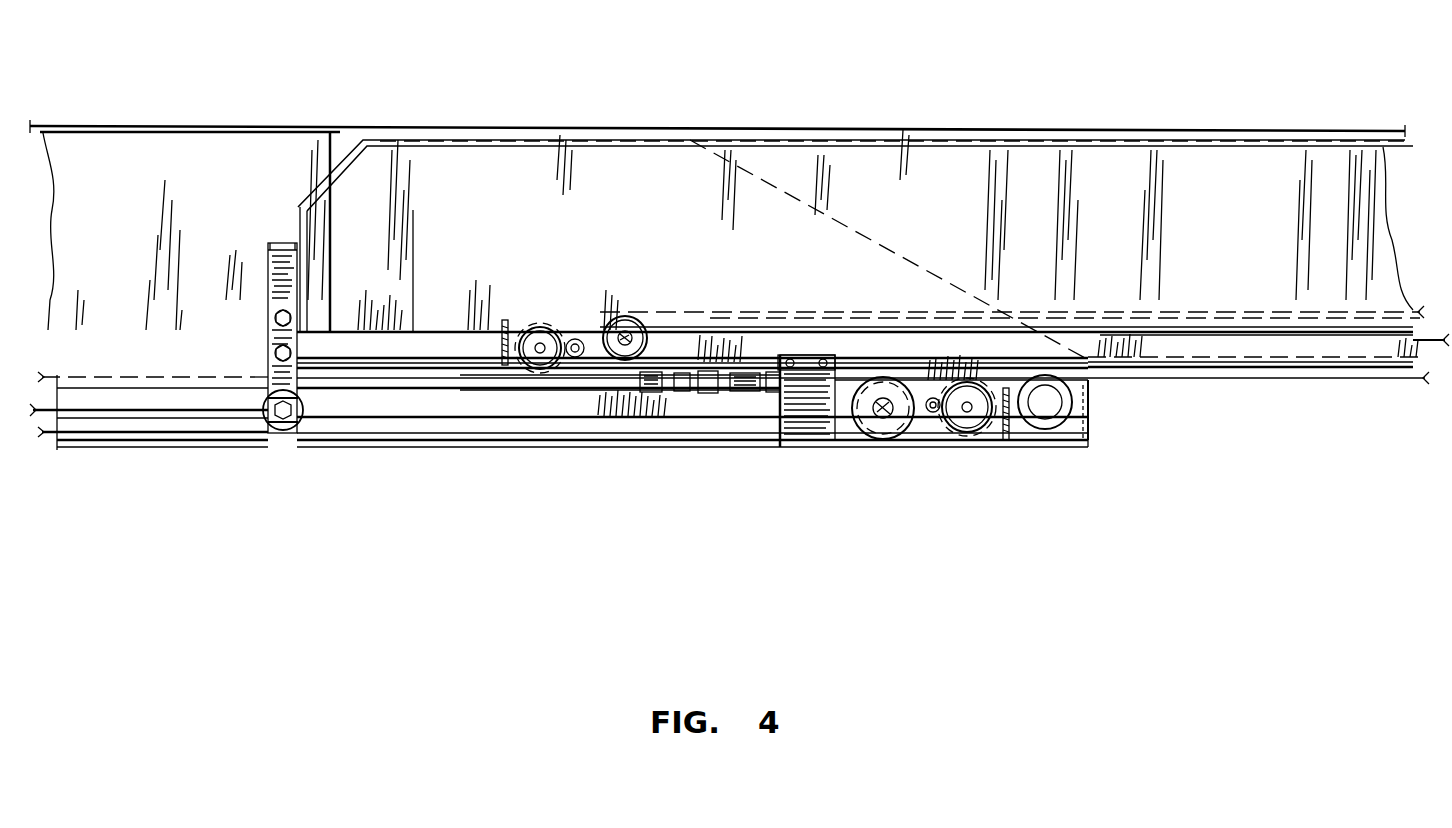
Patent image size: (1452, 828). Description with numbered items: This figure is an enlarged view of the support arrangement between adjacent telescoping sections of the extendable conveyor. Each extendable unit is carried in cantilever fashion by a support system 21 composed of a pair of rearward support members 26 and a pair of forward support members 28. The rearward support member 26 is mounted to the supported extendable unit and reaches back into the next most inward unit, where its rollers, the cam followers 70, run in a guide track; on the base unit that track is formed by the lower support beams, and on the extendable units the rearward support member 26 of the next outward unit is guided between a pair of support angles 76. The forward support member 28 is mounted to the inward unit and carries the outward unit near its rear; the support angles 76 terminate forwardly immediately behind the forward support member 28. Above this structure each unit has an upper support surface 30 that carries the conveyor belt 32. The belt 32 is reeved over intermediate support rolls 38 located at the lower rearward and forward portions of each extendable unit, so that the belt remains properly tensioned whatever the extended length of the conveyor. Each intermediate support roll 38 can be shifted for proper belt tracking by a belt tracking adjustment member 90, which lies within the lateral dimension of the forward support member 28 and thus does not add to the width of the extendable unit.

The support system 21 is at (770, 447).
The rearward support member 26 is at (268, 308).
The forward support member 28 is at (1050, 445).
The upper support surface 30 is at (792, 140).
The conveyor belt 32 is at (906, 127).
The intermediate support roll 38 is at (528, 328).
The cam follower 70 is at (273, 433).
The support angle 76 is at (322, 438).
The belt tracking adjustment member 90 is at (548, 320).